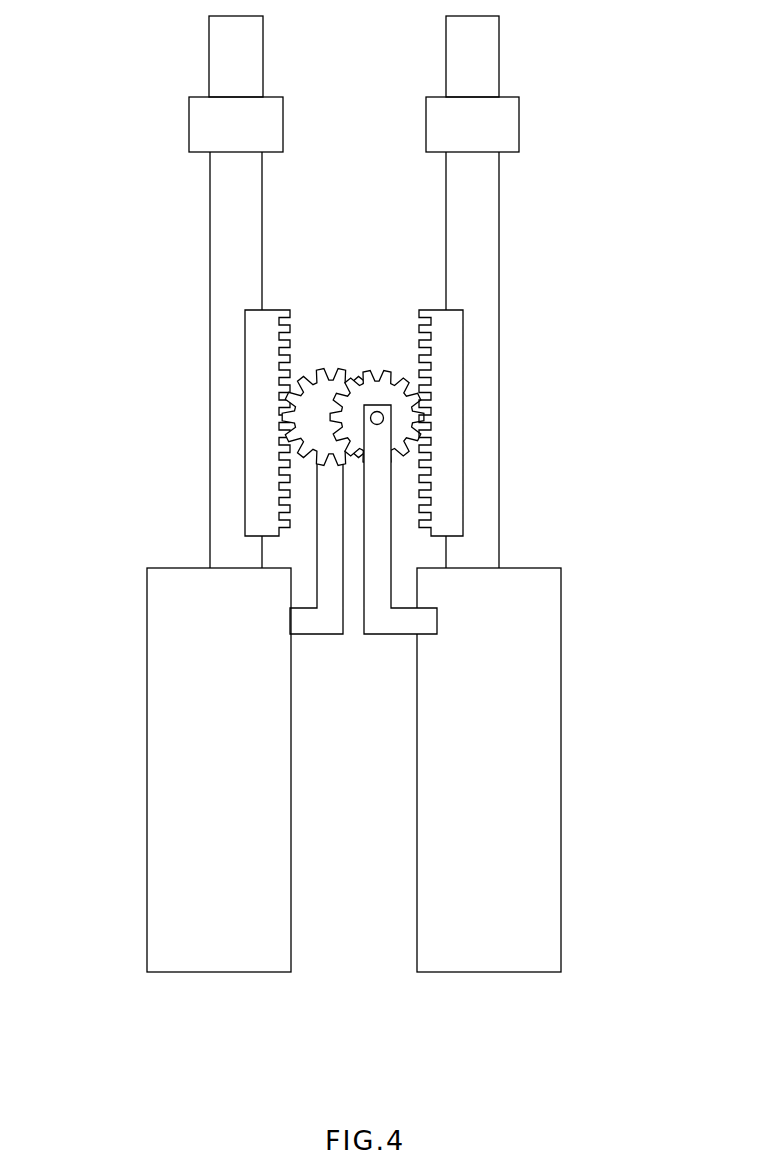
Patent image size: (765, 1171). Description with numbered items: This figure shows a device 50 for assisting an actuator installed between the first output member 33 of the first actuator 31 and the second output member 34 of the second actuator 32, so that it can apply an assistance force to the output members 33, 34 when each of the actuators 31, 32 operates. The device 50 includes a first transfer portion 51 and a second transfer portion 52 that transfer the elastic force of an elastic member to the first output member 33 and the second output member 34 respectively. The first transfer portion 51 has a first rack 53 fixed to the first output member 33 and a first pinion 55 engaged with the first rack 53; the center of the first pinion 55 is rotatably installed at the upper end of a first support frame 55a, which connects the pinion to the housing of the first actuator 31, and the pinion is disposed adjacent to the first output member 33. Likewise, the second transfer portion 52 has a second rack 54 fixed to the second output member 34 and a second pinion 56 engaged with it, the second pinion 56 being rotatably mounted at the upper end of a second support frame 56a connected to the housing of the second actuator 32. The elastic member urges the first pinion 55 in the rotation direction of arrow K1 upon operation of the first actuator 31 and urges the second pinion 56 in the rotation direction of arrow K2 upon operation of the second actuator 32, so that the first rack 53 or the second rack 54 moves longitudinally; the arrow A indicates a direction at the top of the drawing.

The first actuator 31 is at (548, 805).
The second actuator 32 is at (160, 805).
The first output member 33 is at (485, 203).
The second output member 34 is at (222, 207).
The device for assisting an actuator 50 is at (358, 228).
The first transfer portion 51 is at (395, 256).
The second transfer portion 52 is at (141, 296).
The first rack 53 is at (432, 310).
The second rack 54 is at (253, 318).
The first pinion 55 is at (377, 370).
The first support frame 55a is at (389, 623).
The second pinion 56 is at (297, 362).
The second support frame 56a is at (323, 620).
The arrow K1 direction K1 is at (404, 400).
The arrow K2 direction K2 is at (306, 400).
The pressing direction A is at (353, 92).